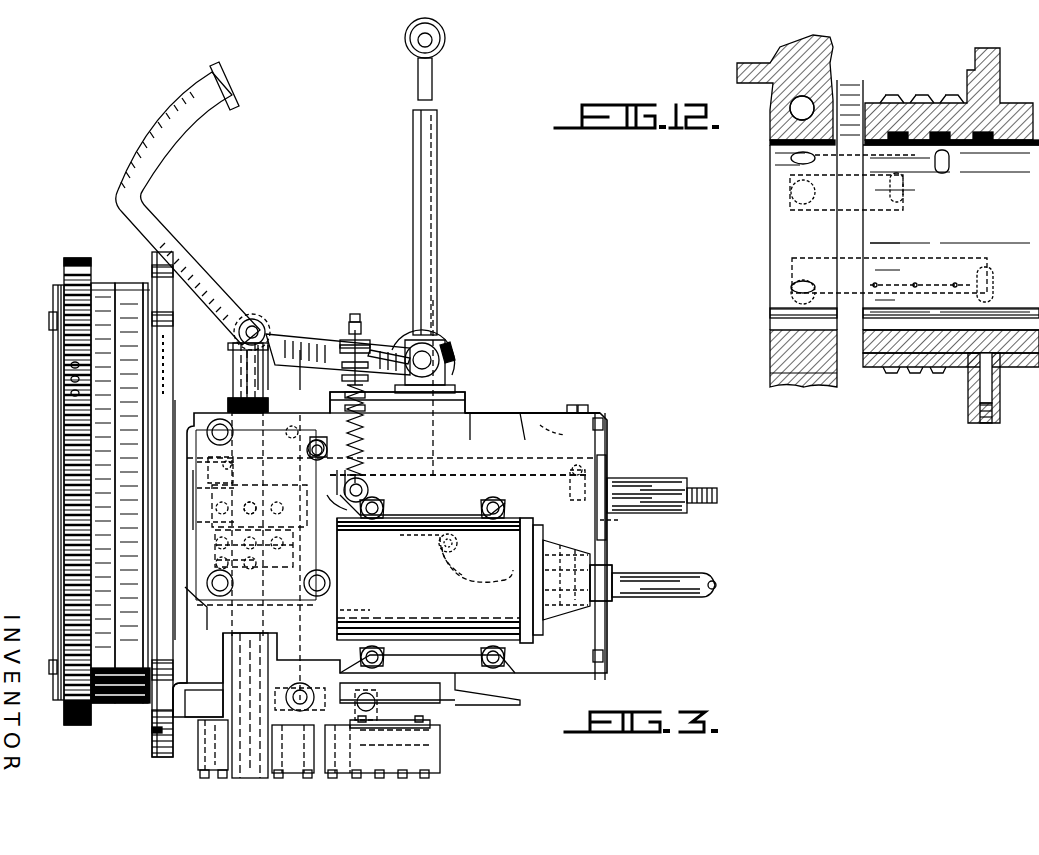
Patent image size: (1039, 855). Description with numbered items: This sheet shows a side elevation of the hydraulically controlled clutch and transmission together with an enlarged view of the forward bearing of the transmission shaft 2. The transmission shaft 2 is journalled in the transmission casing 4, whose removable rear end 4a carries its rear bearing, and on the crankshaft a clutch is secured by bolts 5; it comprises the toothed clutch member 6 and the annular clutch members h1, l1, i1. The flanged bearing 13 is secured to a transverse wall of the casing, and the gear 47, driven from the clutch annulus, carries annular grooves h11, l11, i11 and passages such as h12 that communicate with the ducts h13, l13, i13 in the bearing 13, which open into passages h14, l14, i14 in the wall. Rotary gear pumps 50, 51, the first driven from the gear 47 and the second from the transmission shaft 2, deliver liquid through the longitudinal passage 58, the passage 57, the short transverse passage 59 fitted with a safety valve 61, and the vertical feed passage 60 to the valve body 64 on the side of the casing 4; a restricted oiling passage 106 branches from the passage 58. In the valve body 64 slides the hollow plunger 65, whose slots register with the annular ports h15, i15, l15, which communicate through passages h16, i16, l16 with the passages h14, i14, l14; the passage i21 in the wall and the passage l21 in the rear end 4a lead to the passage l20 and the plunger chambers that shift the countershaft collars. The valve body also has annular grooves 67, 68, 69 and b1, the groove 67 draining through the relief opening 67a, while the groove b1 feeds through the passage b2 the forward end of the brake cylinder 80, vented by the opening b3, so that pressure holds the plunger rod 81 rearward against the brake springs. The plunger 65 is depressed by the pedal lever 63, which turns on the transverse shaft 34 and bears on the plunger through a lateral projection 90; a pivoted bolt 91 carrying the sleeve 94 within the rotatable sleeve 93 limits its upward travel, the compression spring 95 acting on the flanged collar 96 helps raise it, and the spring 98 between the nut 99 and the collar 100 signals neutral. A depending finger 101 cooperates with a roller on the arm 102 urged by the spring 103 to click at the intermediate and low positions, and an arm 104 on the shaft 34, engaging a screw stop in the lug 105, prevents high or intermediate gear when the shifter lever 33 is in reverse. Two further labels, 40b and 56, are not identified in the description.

In FIG. 3, the transmission shaft 2 is at (626, 486).
In FIG. 3, the transmission casing 4 is at (498, 412).
In FIG. 12, the transmission casing 4 is at (760, 64).
In FIG. 3, the rear end of the casing 4a is at (560, 412).
In FIG. 3, the bolts 5 is at (248, 330).
In FIG. 3, the clutch member 6 is at (72, 258).
In FIG. 12, the flanged bearing 13 is at (770, 222).
In FIG. 3, the lever 33 is at (436, 238).
In FIG. 3, the transverse shaft 34 is at (437, 342).
In FIG. 3, the clutch pins 40b is at (71, 393).
In FIG. 12, the gear 47 is at (886, 108).
In FIG. 3, the rotary gear pump 50 is at (202, 758).
In FIG. 3, the rotary gear pump 51 is at (442, 743).
In FIG. 3, the bracket 56 is at (268, 708).
In FIG. 3, the passage 57 is at (424, 700).
In FIG. 3, the passage 58 is at (378, 683).
In FIG. 3, the short transverse passage 59 is at (298, 684).
In FIG. 3, the vertical passage 60 is at (341, 605).
In FIG. 3, the safety valve 61 is at (362, 694).
In FIG. 3, the pedal lever 63 is at (194, 282).
In FIG. 3, the valve body 64 is at (210, 440).
In FIG. 3, the hollow plunger 65 is at (236, 402).
In FIG. 3, the annular groove 67 is at (230, 402).
In FIG. 3, the relief opening 67a is at (242, 402).
In FIG. 3, the annular groove 68 is at (237, 524).
In FIG. 3, the annular groove 69 is at (222, 562).
In FIG. 3, the brake cylinder 80 is at (428, 579).
In FIG. 3, the plunger rod 81 is at (686, 590).
In FIG. 3, the lateral projection 90 is at (258, 318).
In FIG. 3, the bolt 91 is at (357, 330).
In FIG. 3, the sleeve 93 is at (373, 340).
In FIG. 3, the sleeve 94 is at (368, 386).
In FIG. 3, the compression spring 95 is at (322, 345).
In FIG. 3, the flanged collar 96 is at (366, 401).
In FIG. 3, the spring 98 is at (368, 490).
In FIG. 3, the nut 99 is at (316, 435).
In FIG. 3, the collar 100 is at (366, 414).
In FIG. 3, the depending finger 101 is at (448, 430).
In FIG. 3, the arm 102 is at (483, 572).
In FIG. 3, the spring 103 is at (562, 638).
In FIG. 3, the arm 104 is at (370, 362).
In FIG. 3, the lug 105 is at (358, 312).
In FIG. 12, the passage 106 is at (795, 290).
In FIG. 3, the clutch member h1 is at (99, 283).
In FIG. 3, the clutch member l1 is at (120, 283).
In FIG. 3, the clutch member i1 is at (142, 283).
In FIG. 3, the annular groove b1 is at (214, 548).
In FIG. 3, the passage b2 is at (361, 560).
In FIG. 3, the vent opening b3 is at (389, 622).
In FIG. 3, the passage h14 is at (292, 427).
In FIG. 12, the passage h14 is at (800, 108).
In FIG. 3, the annular port h15 is at (237, 461).
In FIG. 3, the passage h16 is at (268, 340).
In FIG. 3, the passage i14 is at (336, 500).
In FIG. 12, the passage i14 is at (796, 290).
In FIG. 3, the annular port i15 is at (225, 470).
In FIG. 3, the passage i16 is at (286, 580).
In FIG. 3, the passage i21 is at (218, 606).
In FIG. 3, the passage l14 is at (302, 352).
In FIG. 12, the passage l14 is at (802, 192).
In FIG. 3, the annular port l15 is at (226, 489).
In FIG. 3, the passage l16 is at (328, 483).
In FIG. 3, the passage l20 is at (620, 520).
In FIG. 3, the passage l21 is at (446, 475).
In FIG. 12, the duct h13 is at (949, 172).
In FIG. 12, the duct l13 is at (906, 198).
In FIG. 12, the duct i13 is at (994, 286).
In FIG. 12, the passage h12 is at (990, 372).
In FIG. 12, the annular groove l11 is at (884, 368).
In FIG. 12, the annular groove h11 is at (913, 369).
In FIG. 12, the annular groove i11 is at (962, 370).